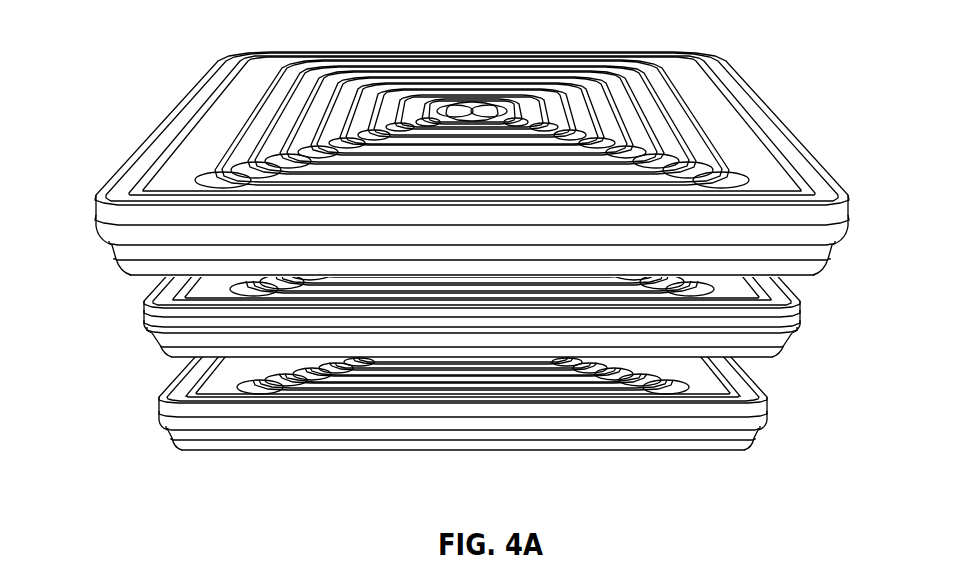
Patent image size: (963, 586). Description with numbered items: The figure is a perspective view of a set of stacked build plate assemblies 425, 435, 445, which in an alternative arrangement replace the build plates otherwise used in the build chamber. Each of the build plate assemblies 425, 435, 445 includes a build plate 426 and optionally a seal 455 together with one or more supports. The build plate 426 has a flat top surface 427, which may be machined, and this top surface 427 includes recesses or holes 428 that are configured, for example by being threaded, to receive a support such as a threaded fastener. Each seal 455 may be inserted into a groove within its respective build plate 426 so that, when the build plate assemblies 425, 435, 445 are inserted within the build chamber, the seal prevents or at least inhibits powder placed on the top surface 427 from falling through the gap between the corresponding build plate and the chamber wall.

The build plate assembly 425 is at (125, 388).
The build plate 426 is at (876, 200).
The top surface 427 is at (673, 150).
The recesses or holes 428 is at (235, 178).
The build plate assembly 435 is at (473, 180).
The build plate assembly 445 is at (421, 351).
The seal 455 is at (588, 340).